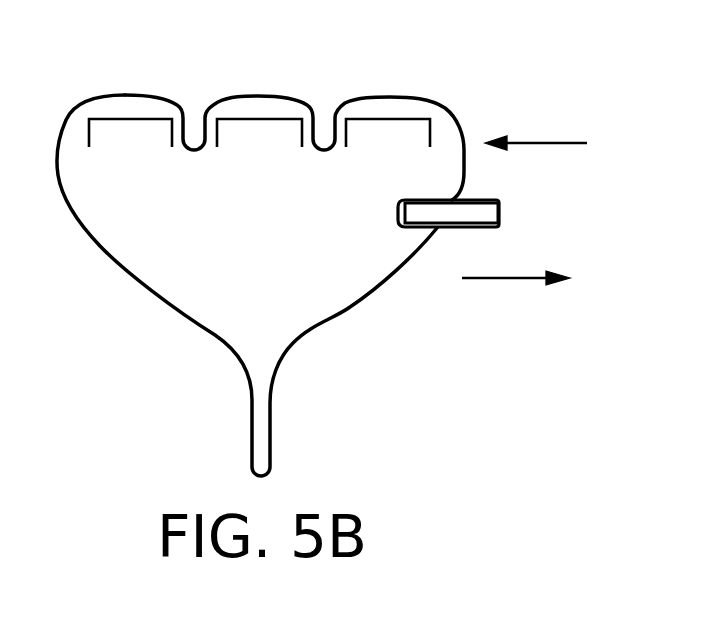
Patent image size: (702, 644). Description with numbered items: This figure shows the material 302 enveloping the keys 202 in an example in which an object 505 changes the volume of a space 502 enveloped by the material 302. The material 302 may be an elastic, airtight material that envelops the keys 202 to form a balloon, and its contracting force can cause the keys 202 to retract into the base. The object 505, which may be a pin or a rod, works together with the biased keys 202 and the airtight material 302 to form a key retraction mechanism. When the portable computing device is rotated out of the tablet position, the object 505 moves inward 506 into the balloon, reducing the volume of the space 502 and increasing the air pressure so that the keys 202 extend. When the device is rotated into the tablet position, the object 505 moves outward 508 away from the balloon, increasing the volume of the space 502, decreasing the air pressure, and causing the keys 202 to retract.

The material 302 is at (432, 85).
The keys 202 is at (247, 170).
The space 502 is at (323, 238).
The object 505 is at (499, 213).
The inward 506 is at (536, 145).
The outward 508 is at (511, 277).